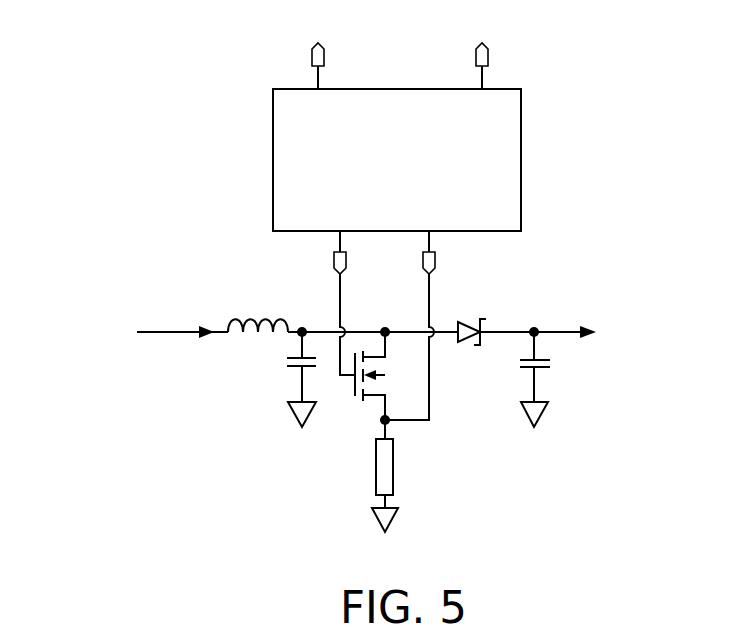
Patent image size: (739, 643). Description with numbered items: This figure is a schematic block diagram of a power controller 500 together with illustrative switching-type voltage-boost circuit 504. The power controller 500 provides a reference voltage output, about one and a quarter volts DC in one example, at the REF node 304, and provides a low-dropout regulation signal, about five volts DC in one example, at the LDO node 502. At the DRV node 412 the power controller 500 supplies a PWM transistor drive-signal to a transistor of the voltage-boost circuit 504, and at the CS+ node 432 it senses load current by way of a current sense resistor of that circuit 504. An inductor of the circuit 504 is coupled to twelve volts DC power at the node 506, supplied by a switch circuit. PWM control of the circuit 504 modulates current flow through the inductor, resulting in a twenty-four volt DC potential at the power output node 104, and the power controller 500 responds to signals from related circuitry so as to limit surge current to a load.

The power controller 500 is at (418, 120).
The REF node 304 is at (312, 53).
The LDO node 502 is at (488, 53).
The DRV node 412 is at (334, 262).
The CS+ node 432 is at (435, 262).
The node 506 is at (59, 268).
The power output node 104 is at (646, 277).
The switching-type voltage-boost circuit 504 is at (492, 492).